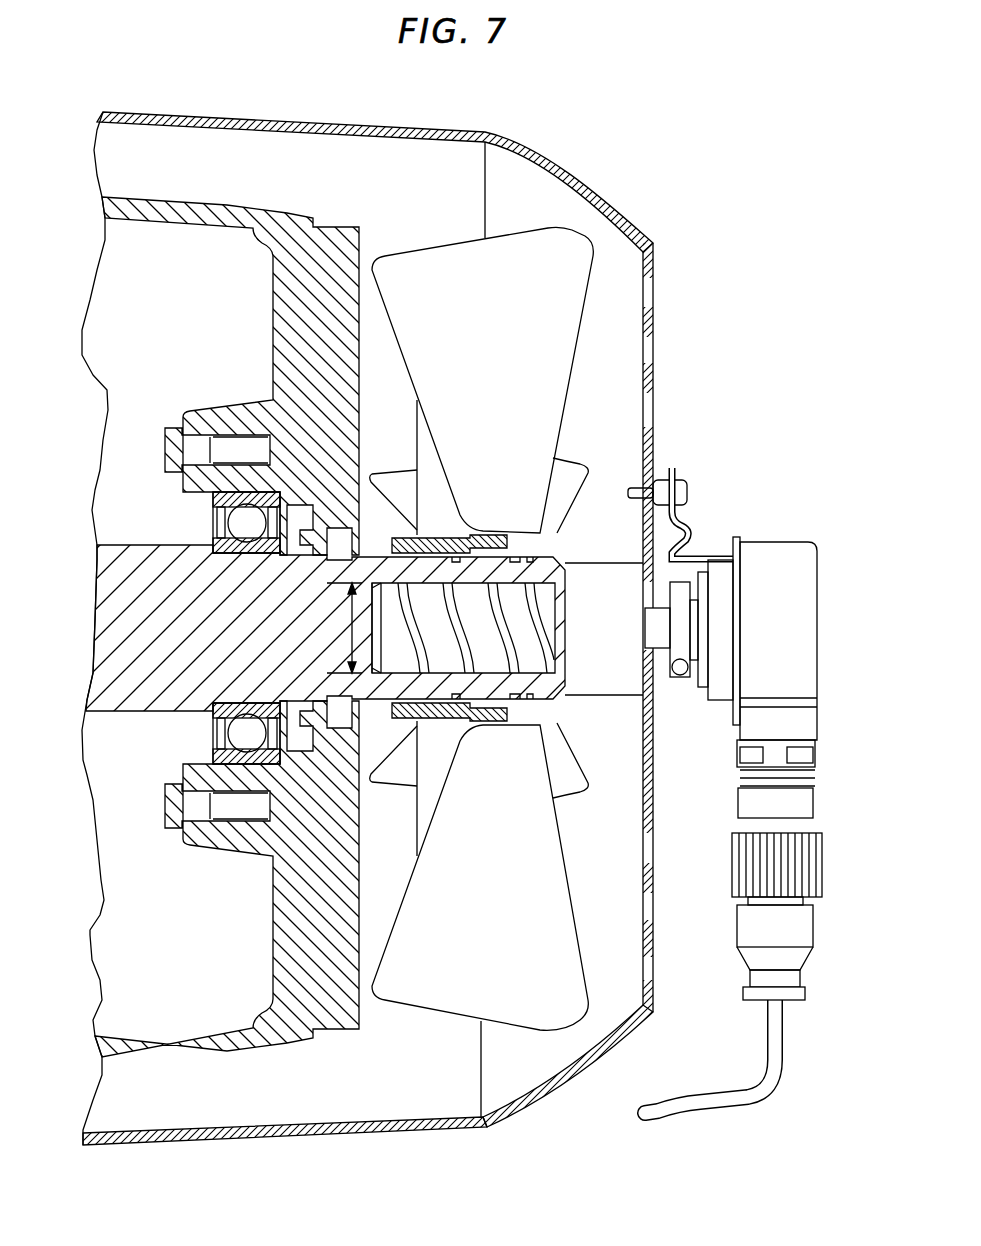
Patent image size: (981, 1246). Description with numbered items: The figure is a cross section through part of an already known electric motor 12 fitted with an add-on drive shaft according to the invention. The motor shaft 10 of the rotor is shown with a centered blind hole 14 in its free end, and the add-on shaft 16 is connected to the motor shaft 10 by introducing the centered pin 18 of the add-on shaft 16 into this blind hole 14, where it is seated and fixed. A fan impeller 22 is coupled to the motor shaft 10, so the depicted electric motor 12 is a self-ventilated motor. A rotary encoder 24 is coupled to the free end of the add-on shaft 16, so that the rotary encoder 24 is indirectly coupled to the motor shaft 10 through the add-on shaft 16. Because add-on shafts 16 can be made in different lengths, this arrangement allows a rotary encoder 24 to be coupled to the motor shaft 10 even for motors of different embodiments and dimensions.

The motor shaft 10 is at (128, 606).
The electric motor 12 is at (630, 190).
The blind hole 14 is at (390, 633).
The add-on shaft 16 is at (592, 660).
The pin 18 is at (464, 652).
The fan impeller 22 is at (553, 358).
The rotary encoder 24 is at (777, 553).